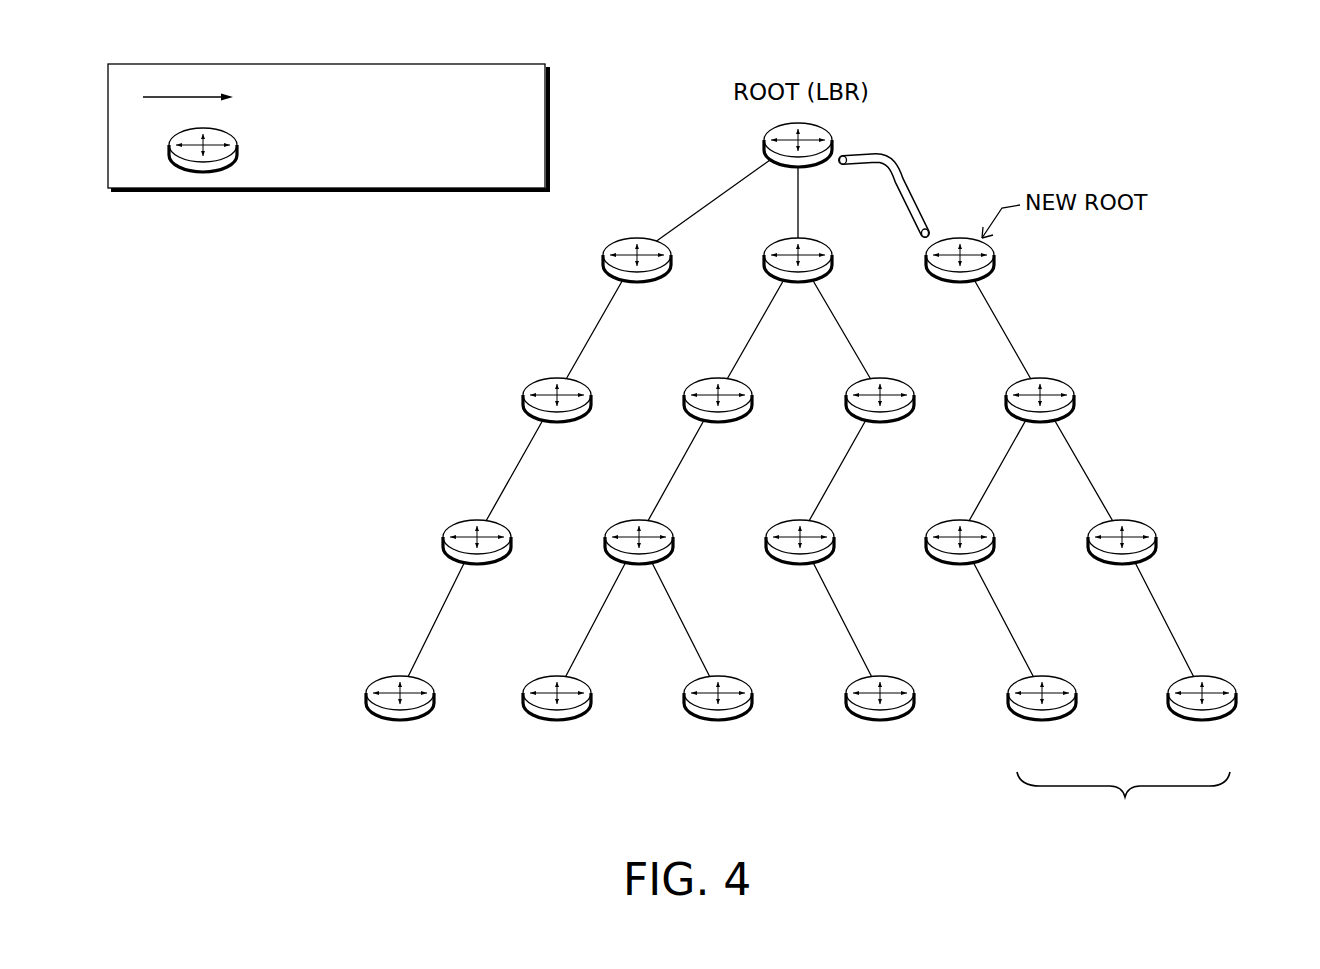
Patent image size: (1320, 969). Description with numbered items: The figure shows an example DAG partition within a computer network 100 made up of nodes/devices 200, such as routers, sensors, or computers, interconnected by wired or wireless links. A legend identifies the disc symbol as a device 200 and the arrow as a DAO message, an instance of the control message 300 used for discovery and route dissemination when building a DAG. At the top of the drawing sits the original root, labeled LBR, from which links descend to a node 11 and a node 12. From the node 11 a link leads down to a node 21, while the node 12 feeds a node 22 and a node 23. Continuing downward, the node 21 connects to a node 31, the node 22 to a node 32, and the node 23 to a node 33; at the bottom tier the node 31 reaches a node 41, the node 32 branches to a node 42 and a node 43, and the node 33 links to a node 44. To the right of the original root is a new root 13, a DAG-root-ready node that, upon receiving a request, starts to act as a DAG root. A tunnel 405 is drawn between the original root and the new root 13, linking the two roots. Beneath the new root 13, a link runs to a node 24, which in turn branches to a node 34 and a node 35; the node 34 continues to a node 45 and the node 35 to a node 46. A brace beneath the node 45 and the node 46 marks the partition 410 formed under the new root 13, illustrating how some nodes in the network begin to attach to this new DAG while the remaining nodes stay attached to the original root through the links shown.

The computer network 100 is at (1223, 45).
The node/device 200 is at (284, 150).
The control message 300 is at (253, 96).
The tunnel 405 is at (892, 165).
The partition 410 is at (1123, 815).
The node 11 is at (637, 277).
The node 12 is at (798, 277).
The new root 13 is at (960, 277).
The node 21 is at (557, 420).
The node 22 is at (718, 420).
The node 23 is at (880, 420).
The node 24 is at (1040, 420).
The node 31 is at (477, 561).
The node 32 is at (639, 561).
The node 33 is at (800, 561).
The node 34 is at (960, 561).
The node 35 is at (1122, 561).
The node 41 is at (400, 718).
The node 42 is at (557, 718).
The node 43 is at (718, 718).
The node 44 is at (880, 718).
The node 45 is at (1042, 718).
The node 46 is at (1202, 718).